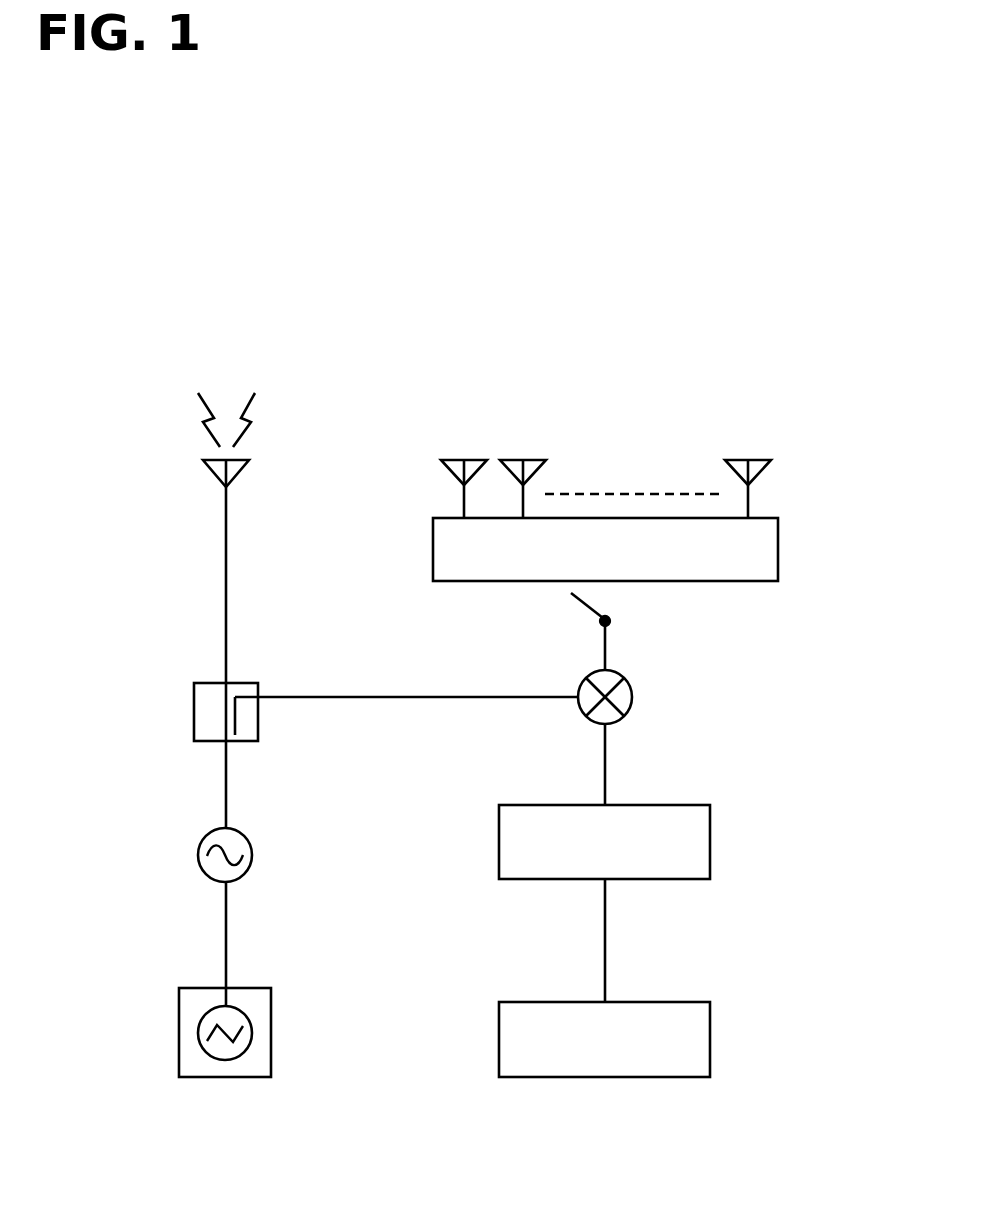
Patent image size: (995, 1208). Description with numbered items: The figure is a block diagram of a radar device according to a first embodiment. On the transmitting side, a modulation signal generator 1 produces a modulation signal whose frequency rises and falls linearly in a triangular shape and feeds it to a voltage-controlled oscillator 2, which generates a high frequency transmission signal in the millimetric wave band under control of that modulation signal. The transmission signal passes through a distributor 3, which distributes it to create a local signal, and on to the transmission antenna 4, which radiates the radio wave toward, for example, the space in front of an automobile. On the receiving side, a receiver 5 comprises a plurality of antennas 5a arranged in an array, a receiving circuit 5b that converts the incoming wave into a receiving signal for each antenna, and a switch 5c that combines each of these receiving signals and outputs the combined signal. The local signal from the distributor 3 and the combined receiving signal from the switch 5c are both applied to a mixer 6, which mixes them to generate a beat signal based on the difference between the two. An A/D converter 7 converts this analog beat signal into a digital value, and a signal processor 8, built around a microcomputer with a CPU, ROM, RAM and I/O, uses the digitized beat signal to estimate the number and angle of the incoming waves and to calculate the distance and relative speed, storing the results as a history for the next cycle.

The modulation signal generator 1 is at (272, 1032).
The voltage-controlled oscillator 2 is at (253, 856).
The distributor 3 is at (258, 730).
The transmission antenna 4 is at (240, 470).
The receiver 5 is at (667, 565).
The antennas 5a is at (762, 466).
The receiving circuit 5b is at (778, 551).
The switch 5c is at (611, 619).
The mixer 6 is at (634, 696).
The A/D converter 7 is at (711, 838).
The signal processor 8 is at (711, 1036).